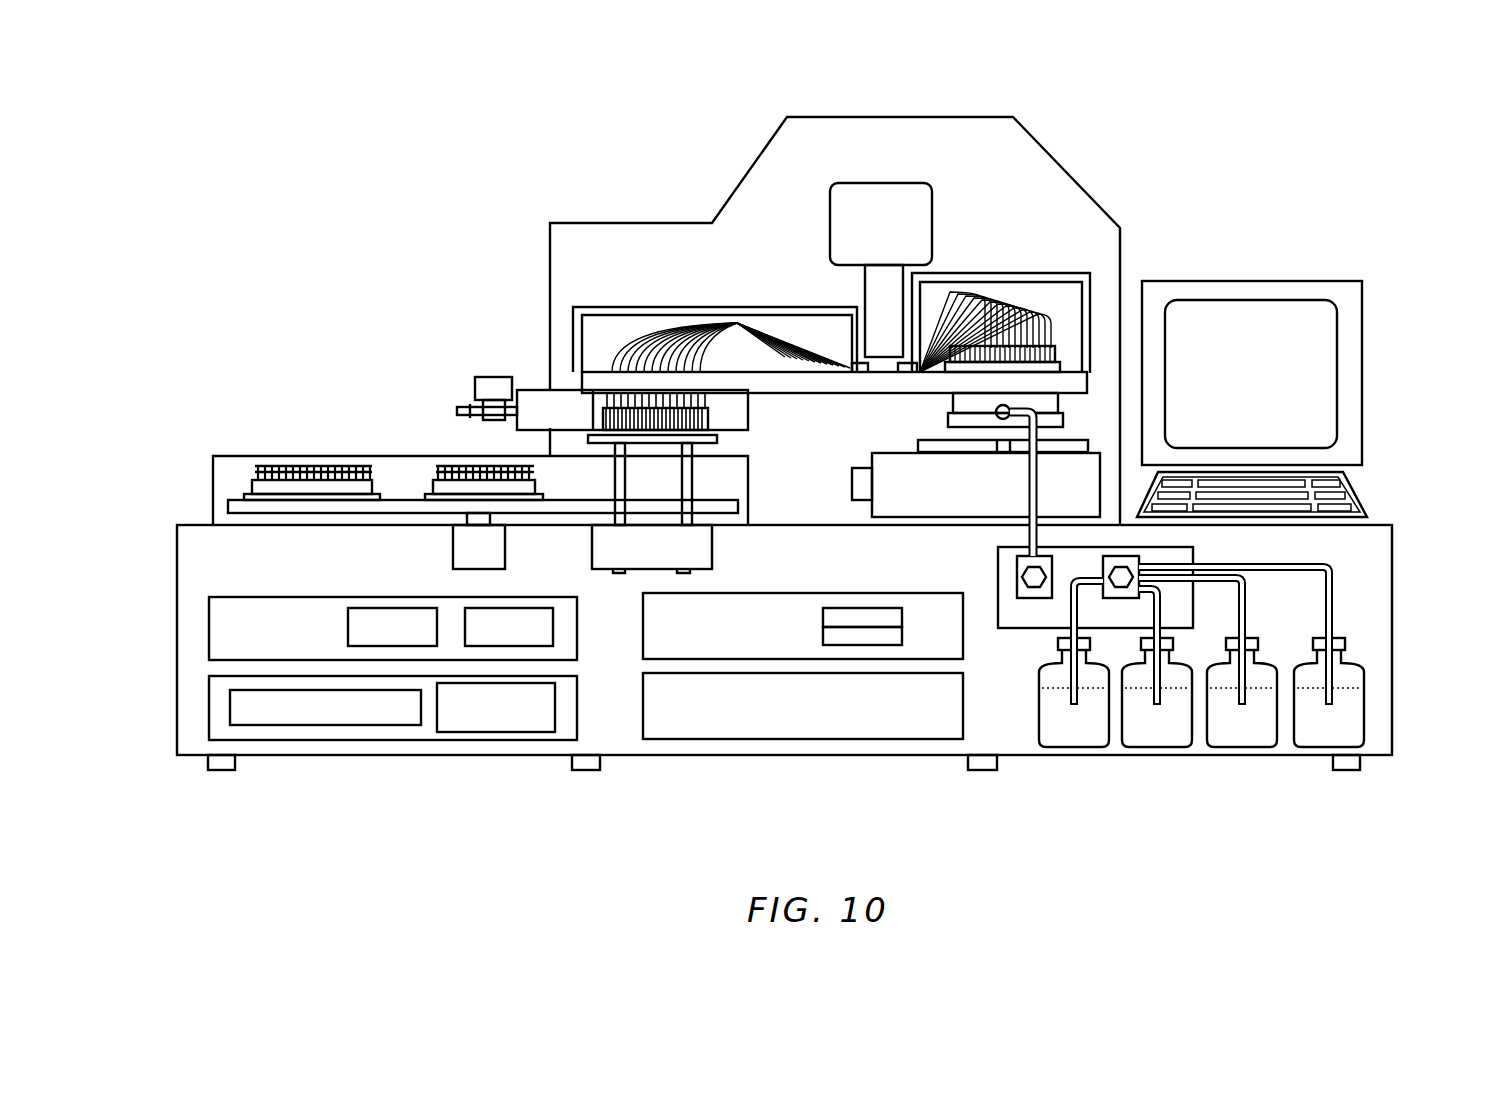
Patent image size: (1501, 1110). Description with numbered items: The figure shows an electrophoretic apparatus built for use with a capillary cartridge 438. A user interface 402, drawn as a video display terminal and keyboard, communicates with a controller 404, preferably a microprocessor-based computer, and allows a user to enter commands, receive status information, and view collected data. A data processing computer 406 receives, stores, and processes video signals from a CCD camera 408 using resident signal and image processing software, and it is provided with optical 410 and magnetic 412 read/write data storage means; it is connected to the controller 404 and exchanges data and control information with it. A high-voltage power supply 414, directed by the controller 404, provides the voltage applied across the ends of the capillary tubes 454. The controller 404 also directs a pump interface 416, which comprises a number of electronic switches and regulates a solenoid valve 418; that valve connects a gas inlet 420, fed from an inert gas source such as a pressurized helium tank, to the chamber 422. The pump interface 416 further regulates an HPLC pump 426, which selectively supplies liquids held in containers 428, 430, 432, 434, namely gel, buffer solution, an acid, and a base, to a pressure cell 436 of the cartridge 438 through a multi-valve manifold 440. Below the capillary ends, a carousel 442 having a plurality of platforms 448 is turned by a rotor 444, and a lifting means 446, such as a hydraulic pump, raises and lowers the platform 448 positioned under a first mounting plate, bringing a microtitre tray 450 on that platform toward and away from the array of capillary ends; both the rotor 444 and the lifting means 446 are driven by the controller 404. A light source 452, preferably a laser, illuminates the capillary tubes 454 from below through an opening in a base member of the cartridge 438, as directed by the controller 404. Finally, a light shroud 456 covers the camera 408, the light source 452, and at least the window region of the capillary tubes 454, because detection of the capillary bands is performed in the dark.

The user interface 402 is at (1252, 268).
The controller 404 is at (803, 706).
The data processing computer 406 is at (803, 626).
The CCD camera 408 is at (881, 277).
The optical read/write data storage means 410 is at (893, 619).
The magnetic read/write data storage means 412 is at (893, 638).
The high-voltage power supply 414 is at (343, 735).
The pump interface 416 is at (393, 628).
The solenoid valve 418 is at (490, 378).
The gas inlet 420 is at (458, 410).
The chamber 422 is at (527, 390).
The HPLC pump 426 is at (1032, 618).
The container 428 is at (1074, 733).
The container 430 is at (1158, 733).
The container 432 is at (1257, 733).
The container 434 is at (1342, 733).
The pressure cell 436 is at (1050, 367).
The cartridge 438 is at (1000, 268).
The multi-valve manifold 440 is at (1127, 560).
The carousel 442 is at (240, 505).
The rotor 444 is at (479, 541).
The lifting means 446 is at (652, 549).
The platform 448 is at (600, 437).
The microtitre tray 450 is at (600, 418).
The light source 452 is at (976, 455).
The capillary tubes 454 is at (740, 320).
The light shroud 456 is at (900, 142).